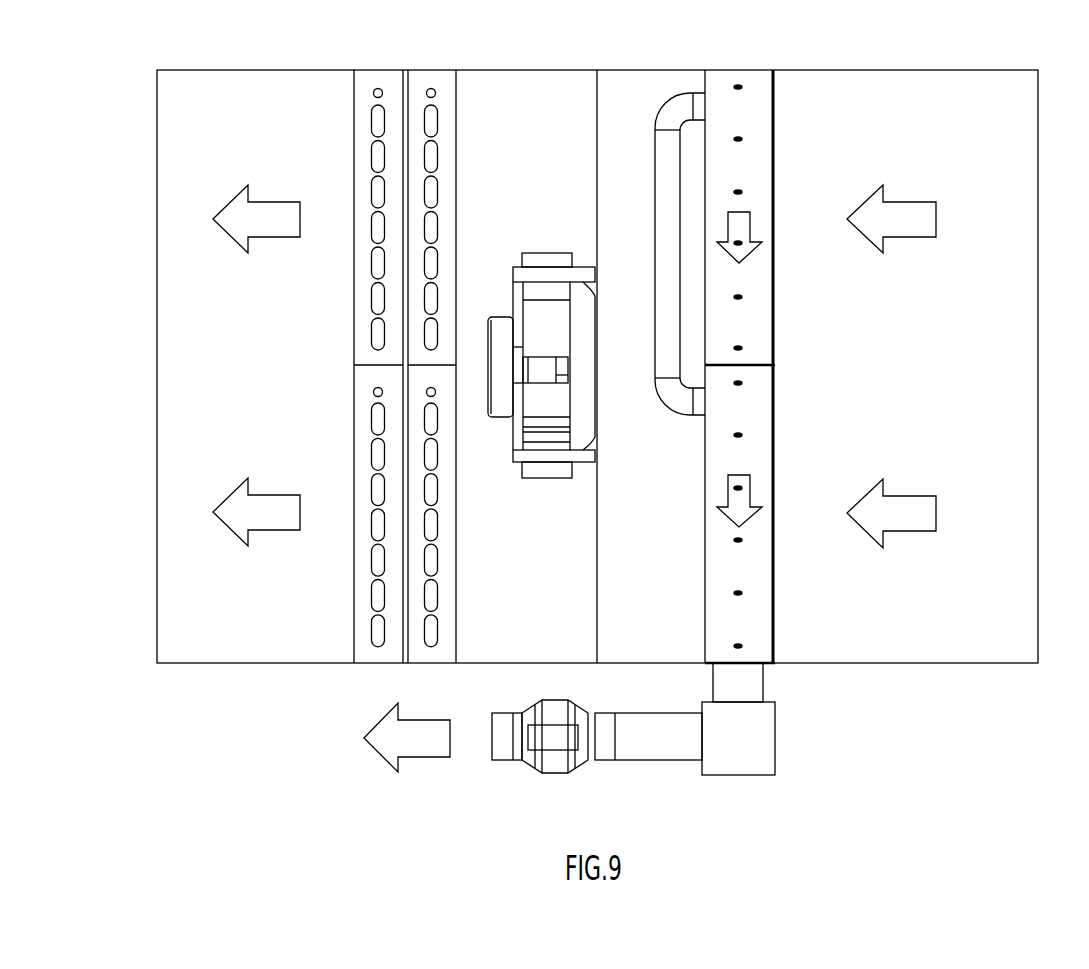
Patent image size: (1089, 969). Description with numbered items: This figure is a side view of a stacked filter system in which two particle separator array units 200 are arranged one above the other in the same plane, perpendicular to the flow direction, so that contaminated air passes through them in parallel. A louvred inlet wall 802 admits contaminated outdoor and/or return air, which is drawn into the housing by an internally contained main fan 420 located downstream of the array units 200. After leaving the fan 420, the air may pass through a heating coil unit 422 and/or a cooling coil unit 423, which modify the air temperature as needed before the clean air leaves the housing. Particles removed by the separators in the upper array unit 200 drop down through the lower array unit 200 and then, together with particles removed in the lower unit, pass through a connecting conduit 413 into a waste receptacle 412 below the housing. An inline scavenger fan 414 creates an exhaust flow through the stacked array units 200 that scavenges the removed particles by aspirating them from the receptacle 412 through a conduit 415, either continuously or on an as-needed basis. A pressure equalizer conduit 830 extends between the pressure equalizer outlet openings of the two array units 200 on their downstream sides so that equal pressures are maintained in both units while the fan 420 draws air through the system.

The particle separator array unit 200 is at (750, 78).
The louvred inlet wall 802 is at (1038, 628).
The pressure equalizer conduit 830 is at (655, 310).
The main fan 420 is at (552, 255).
The heating coil unit 422 is at (440, 78).
The cooling coil unit 423 is at (372, 78).
The waste receptacle 412 is at (775, 745).
The connecting conduit 413 is at (713, 688).
The inline scavenger fan 414 is at (553, 775).
The conduit 415 is at (636, 763).